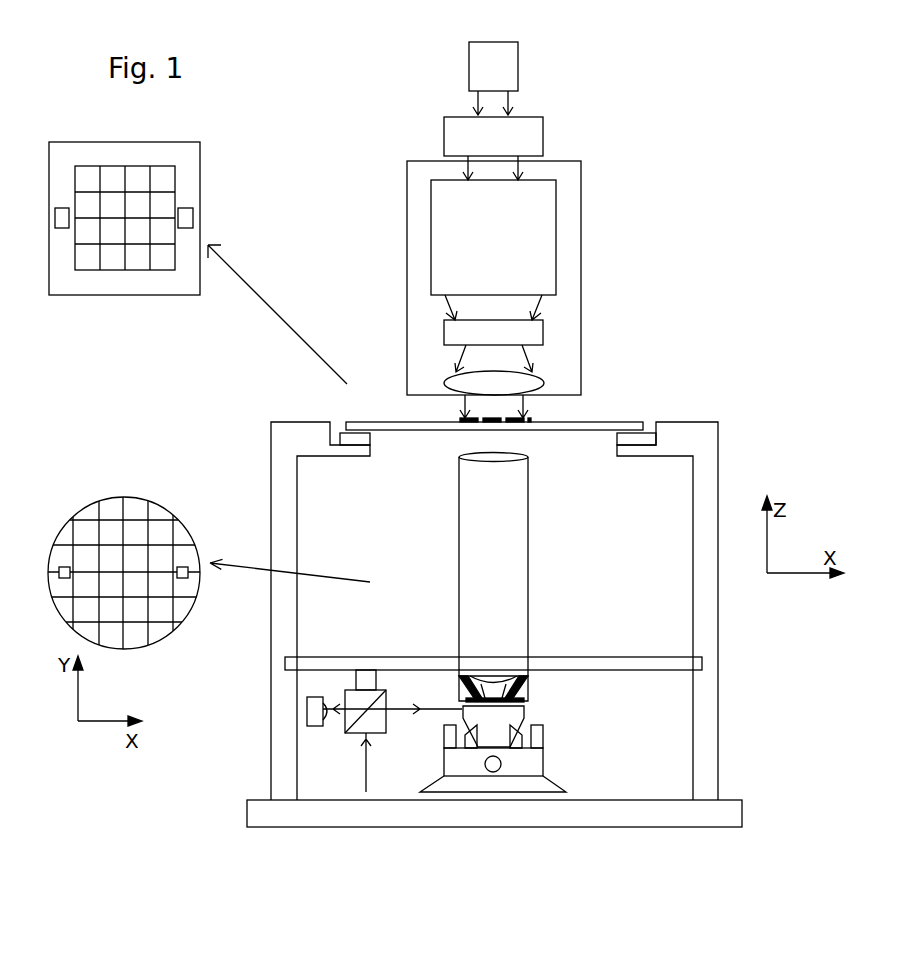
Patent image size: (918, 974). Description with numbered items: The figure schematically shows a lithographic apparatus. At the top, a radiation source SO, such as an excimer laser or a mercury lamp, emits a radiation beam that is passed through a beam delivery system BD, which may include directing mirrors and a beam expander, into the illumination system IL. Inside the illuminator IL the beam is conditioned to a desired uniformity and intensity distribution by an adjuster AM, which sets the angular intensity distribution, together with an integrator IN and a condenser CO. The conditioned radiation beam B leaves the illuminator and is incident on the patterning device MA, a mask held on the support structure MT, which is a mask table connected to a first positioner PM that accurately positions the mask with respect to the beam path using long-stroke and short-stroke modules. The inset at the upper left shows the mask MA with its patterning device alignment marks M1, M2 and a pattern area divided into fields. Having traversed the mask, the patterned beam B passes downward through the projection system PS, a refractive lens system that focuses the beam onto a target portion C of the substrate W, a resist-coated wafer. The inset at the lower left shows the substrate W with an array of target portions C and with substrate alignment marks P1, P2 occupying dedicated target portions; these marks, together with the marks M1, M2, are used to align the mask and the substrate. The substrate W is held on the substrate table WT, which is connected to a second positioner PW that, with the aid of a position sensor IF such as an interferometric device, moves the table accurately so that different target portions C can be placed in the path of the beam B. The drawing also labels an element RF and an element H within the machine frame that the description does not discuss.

The radiation source SO is at (518, 72).
The beam delivery system BD is at (543, 140).
The illumination system IL is at (581, 202).
The adjuster AM is at (556, 248).
The integrator IN is at (543, 330).
The condenser CO is at (544, 383).
The radiation beam B is at (493, 409).
The patterning device MA is at (462, 419).
The target portion C is at (110, 238).
The patterning device alignment mark M1 is at (185, 208).
The patterning device alignment mark M2 is at (62, 208).
The support structure MT is at (625, 420).
The first positioner PM is at (640, 442).
The projection system PS is at (528, 547).
The reference frame RF is at (585, 657).
The holder / lens mount H is at (528, 683).
The substrate W is at (458, 699).
The substrate alignment mark P1 is at (65, 567).
The substrate alignment mark P2 is at (182, 567).
The substrate table WT is at (525, 708).
The second positioner PW is at (533, 763).
The position sensor IF is at (338, 747).